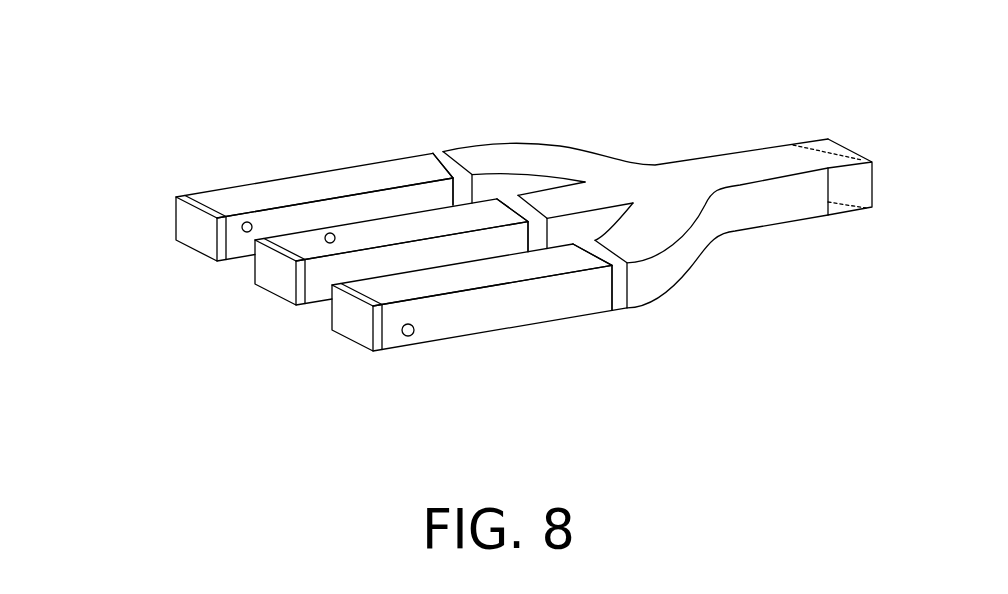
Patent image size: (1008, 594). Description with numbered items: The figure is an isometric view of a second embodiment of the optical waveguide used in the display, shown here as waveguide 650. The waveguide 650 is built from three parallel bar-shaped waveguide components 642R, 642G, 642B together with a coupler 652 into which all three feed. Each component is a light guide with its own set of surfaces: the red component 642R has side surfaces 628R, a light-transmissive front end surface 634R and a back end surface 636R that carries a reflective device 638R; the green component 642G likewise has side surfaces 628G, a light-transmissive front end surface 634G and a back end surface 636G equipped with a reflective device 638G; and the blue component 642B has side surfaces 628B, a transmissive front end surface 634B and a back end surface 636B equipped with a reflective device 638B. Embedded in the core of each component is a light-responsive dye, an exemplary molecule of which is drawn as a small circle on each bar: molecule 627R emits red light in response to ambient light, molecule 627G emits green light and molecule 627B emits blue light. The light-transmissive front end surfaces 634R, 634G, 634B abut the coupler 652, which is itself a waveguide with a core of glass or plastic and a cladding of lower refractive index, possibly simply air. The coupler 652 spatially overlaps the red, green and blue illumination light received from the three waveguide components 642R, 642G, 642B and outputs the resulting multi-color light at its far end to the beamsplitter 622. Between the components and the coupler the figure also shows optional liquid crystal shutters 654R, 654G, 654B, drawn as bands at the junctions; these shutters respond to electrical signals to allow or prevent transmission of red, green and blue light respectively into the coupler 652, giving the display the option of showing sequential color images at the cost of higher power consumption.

The waveguide 650 is at (412, 453).
The coupler 652 is at (655, 176).
The beamsplitter 622 is at (829, 150).
The waveguide component 642R is at (418, 214).
The waveguide component 642G is at (455, 266).
The waveguide component 642B is at (493, 325).
The reflective device 638R is at (180, 225).
The reflective device 638G is at (260, 275).
The reflective device 638B is at (333, 320).
The back end surface 636R is at (212, 246).
The back end surface 636G is at (293, 300).
The back end surface 636B is at (368, 348).
The side surfaces 628R is at (250, 197).
The side surfaces 628G is at (376, 230).
The side surfaces 628B is at (497, 290).
The light-responsive dye molecule 627R is at (240, 222).
The light-responsive dye molecule 627G is at (327, 232).
The light-responsive dye molecule 627B is at (412, 336).
The light-transmissive front end surface 634R is at (420, 158).
The light-transmissive front end surface 634G is at (507, 203).
The light-transmissive front end surface 634B is at (612, 288).
The liquid crystal shutter 654R is at (432, 155).
The liquid crystal shutter 654G is at (513, 204).
The liquid crystal shutter 654B is at (615, 288).